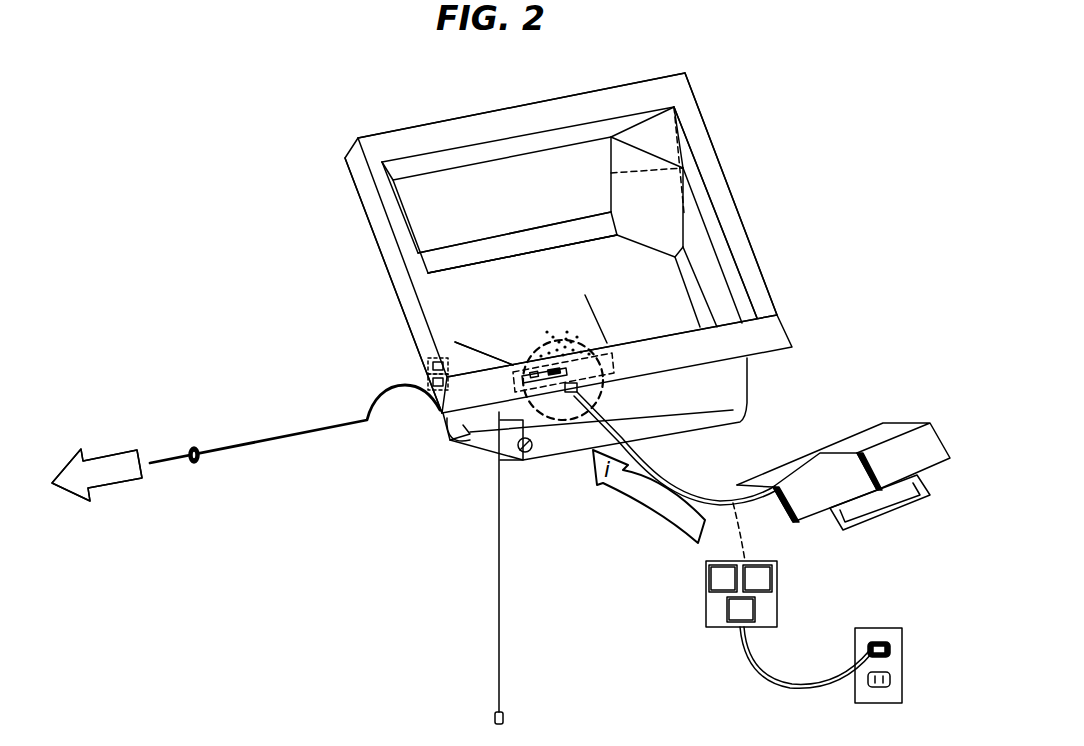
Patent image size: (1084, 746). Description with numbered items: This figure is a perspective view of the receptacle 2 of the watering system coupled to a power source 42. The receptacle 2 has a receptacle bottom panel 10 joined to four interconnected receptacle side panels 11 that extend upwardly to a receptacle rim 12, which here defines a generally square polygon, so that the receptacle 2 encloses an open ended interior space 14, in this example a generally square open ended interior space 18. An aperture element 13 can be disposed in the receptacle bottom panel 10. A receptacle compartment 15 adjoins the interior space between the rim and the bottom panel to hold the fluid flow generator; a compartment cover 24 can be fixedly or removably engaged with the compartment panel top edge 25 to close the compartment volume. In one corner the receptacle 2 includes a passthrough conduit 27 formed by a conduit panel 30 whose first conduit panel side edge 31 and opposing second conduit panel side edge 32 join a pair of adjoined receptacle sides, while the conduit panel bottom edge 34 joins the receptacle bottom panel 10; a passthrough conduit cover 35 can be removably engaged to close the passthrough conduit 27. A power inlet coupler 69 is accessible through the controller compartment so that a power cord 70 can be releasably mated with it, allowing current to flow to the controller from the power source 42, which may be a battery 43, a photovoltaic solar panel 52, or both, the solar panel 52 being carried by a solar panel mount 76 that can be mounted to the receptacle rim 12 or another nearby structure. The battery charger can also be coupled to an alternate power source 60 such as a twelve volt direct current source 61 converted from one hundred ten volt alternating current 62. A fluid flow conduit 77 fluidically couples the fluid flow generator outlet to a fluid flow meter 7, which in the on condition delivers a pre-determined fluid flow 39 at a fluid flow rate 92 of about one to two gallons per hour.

The receptacle 2 is at (742, 88).
The fluid flow meter 7 is at (199, 447).
The receptacle bottom panel 10 is at (458, 300).
The receptacle side panels 11 is at (493, 177).
The receptacle rim 12 is at (768, 338).
The aperture element 13 is at (568, 340).
The open ended interior space 14 is at (560, 240).
The receptacle compartment 15 is at (467, 332).
The generally square open ended interior space 18 is at (533, 280).
The compartment cover 24 is at (473, 363).
The compartment panel top edge 25 is at (513, 365).
The passthrough conduit 27 is at (700, 155).
The conduit panel 30 is at (648, 238).
The first conduit panel side edge 31 is at (608, 185).
The second conduit panel side edge 32 is at (686, 218).
The conduit panel bottom edge 34 is at (660, 257).
The passthrough conduit cover 35 is at (658, 133).
The fluid flow 39 is at (101, 475).
The power source 42 is at (631, 462).
The battery 43 is at (432, 356).
The photovoltaic solar panel 52 is at (797, 510).
The alternate power source 60 is at (741, 565).
The 12 volt direct current source 61 is at (757, 578).
The 110 volt alternating current 62 is at (741, 609).
The power inlet coupler 69 is at (600, 378).
The power cord 70 is at (567, 395).
The solar panel mount 76 is at (903, 502).
The fluid flow conduit 77 is at (268, 440).
The fluid flow rate 92 is at (97, 475).